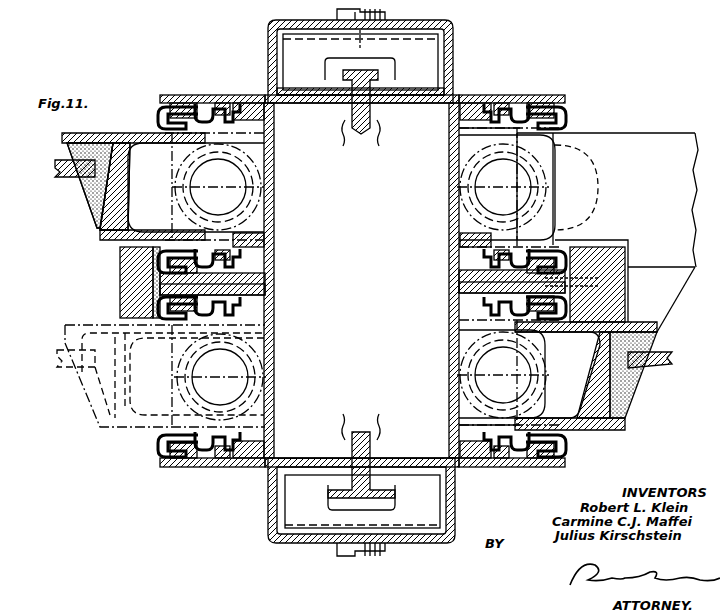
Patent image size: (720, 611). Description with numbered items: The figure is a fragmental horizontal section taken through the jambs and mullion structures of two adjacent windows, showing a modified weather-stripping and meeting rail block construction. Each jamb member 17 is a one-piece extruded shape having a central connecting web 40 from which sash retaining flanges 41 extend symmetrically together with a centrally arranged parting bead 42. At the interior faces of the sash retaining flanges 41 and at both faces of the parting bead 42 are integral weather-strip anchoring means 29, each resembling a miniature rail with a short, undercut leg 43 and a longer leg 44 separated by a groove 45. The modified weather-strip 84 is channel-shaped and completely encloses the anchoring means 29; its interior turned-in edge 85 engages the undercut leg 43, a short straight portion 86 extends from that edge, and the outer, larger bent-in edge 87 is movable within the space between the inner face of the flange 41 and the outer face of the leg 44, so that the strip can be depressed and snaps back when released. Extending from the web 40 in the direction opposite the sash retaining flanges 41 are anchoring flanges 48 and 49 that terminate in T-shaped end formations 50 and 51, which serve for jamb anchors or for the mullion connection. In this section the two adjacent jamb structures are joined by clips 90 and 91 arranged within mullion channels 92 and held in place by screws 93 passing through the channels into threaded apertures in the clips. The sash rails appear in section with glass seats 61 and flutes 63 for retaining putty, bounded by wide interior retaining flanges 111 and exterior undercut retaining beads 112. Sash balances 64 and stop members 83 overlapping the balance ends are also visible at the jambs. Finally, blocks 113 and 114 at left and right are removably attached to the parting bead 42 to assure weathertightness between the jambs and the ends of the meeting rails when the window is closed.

The jamb member 17 is at (247, 86).
The weather-strip anchoring means 29 is at (190, 100).
The central connecting web 40 is at (272, 244).
The sash retaining flange 41 is at (175, 94).
The parting bead 42 is at (270, 297).
The undercut leg 43 is at (232, 128).
The longer leg 44 is at (157, 118).
The groove 45 is at (208, 468).
The anchoring flange 48 is at (330, 105).
The anchoring flange 49 is at (300, 456).
The T-shaped end formation 50 is at (358, 140).
The T-shaped end formation 51 is at (358, 420).
The glass seat 61 is at (100, 180).
The flute 63 is at (110, 207).
The sash balance 64 is at (278, 209).
The stop member 83 is at (276, 150).
The modified weather-strip 84 is at (160, 302).
The turned-in edge 85 is at (500, 112).
The short straight portion 86 is at (505, 130).
The movable bent-in edge 87 is at (170, 438).
The clip 90 is at (425, 58).
The clip 91 is at (292, 505).
The mullion channel 92 is at (453, 28).
The screw 93 is at (386, 14).
The interior retaining flange 111 is at (62, 133).
The exterior undercut retaining bead 112 is at (104, 236).
The block 113 is at (120, 262).
The block 114 is at (625, 300).